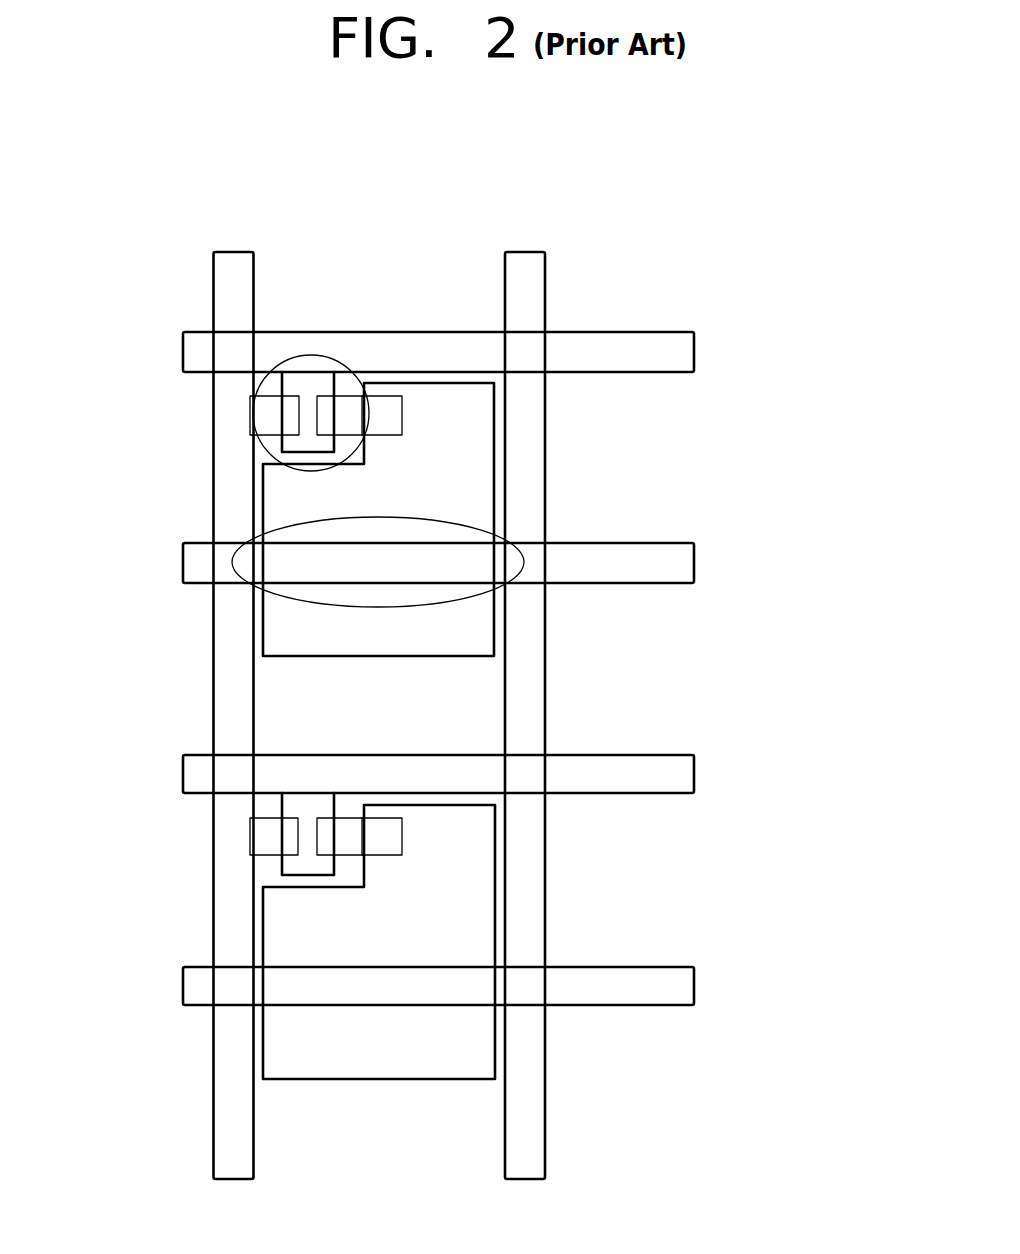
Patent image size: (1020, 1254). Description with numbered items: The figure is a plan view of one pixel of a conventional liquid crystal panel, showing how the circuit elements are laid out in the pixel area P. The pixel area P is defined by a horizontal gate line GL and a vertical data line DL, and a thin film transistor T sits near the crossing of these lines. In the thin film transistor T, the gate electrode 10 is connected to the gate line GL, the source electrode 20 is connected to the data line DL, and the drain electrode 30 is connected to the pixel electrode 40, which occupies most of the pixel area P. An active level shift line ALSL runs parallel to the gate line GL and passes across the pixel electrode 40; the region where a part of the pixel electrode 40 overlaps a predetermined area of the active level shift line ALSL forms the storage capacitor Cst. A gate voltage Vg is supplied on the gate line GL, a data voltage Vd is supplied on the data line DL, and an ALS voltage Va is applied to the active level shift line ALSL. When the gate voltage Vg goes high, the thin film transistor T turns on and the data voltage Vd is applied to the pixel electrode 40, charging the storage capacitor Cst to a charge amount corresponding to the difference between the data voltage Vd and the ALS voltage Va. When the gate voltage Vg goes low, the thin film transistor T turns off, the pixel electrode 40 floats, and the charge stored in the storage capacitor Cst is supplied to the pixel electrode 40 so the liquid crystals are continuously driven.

The gate electrode 10 is at (283, 452).
The source electrode 20 is at (282, 406).
The drain electrode 30 is at (282, 427).
The pixel electrode 40 is at (263, 633).
The thin film transistor T is at (311, 355).
The pixel area P is at (506, 473).
The storage capacitor Cst is at (413, 518).
The gate line GL is at (694, 352).
The data line DL is at (527, 257).
The active level shift line ALSL is at (694, 563).
The data voltage Vd is at (233, 226).
The gate voltage Vg is at (165, 352).
The ALS voltage Va is at (165, 564).